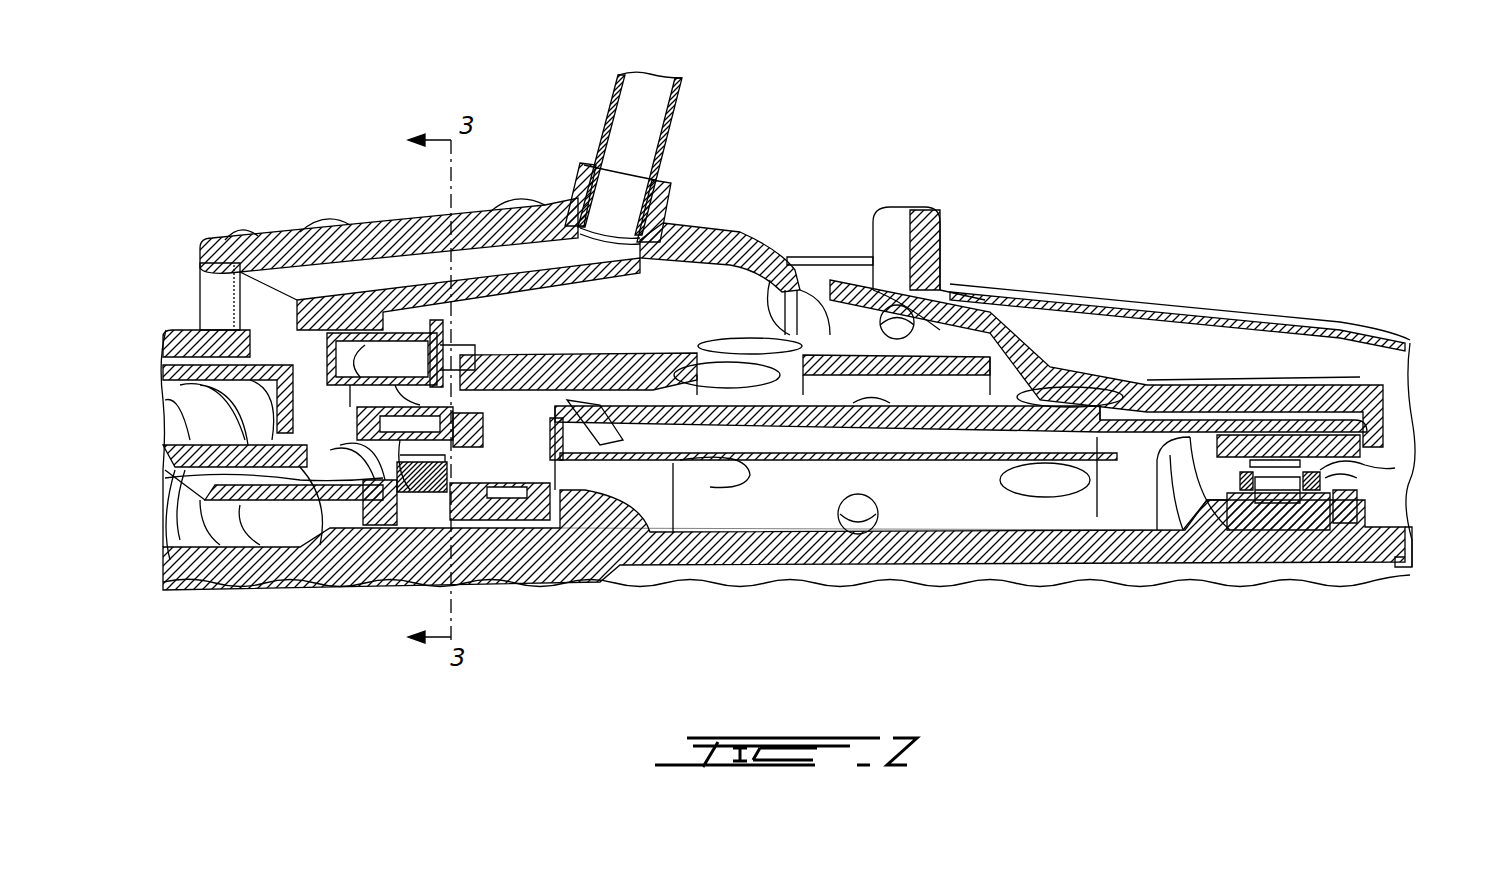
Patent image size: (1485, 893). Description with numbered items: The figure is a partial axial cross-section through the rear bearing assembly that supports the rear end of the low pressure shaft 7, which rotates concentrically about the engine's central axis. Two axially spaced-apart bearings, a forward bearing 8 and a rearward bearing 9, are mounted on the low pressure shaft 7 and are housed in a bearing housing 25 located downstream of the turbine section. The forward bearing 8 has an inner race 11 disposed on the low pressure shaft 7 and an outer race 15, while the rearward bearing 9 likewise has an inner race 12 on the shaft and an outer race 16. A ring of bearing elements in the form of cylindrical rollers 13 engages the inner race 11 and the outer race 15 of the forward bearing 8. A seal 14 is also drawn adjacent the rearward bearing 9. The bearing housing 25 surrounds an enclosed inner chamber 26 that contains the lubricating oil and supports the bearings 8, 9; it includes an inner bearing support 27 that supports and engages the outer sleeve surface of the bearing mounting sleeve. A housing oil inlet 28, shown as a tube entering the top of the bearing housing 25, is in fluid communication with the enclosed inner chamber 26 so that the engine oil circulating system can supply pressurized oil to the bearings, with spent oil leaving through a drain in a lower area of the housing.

The low pressure shaft 7 is at (838, 548).
The forward bearing 8 is at (362, 600).
The rearward bearing 9 is at (1252, 592).
The inner race 11 is at (362, 502).
The inner race 12 is at (1290, 520).
The cylindrical rollers 13 is at (327, 490).
The seal 14 is at (1345, 488).
The outer race 15 is at (415, 385).
The outer race 16 is at (1293, 420).
The bearing housing 25 is at (735, 240).
The enclosed inner chamber 26 is at (953, 505).
The inner bearing support 27 is at (1020, 355).
The housing oil inlet 28 is at (585, 165).